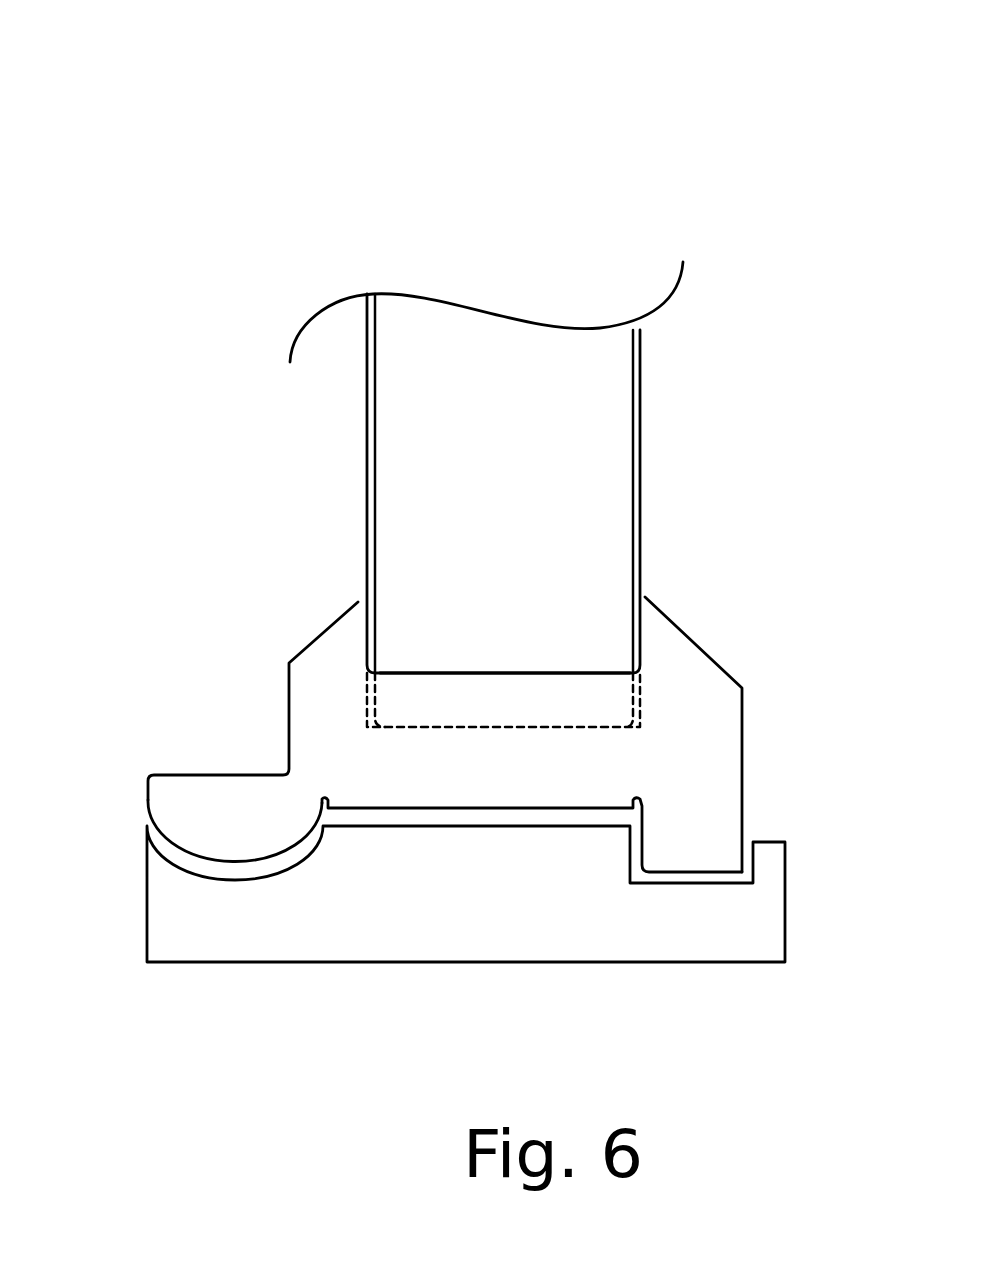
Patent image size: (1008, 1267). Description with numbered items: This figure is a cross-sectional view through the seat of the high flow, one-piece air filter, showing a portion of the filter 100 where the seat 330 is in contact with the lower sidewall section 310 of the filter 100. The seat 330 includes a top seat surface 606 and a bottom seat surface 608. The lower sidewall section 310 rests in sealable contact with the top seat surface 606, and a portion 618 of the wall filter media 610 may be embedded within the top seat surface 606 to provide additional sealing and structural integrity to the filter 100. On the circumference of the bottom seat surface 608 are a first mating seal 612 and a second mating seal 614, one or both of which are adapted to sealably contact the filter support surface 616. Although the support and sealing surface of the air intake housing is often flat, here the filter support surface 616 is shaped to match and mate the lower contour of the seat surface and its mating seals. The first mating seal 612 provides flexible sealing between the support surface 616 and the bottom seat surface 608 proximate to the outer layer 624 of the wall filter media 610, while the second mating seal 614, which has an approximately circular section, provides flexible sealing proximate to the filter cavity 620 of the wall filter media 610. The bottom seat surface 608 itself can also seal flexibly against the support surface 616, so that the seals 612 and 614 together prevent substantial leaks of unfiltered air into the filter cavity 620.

The filter 100 is at (580, 243).
The lower sidewall section 310 is at (482, 467).
The seat 330 is at (458, 734).
The top seat surface 606 is at (522, 670).
The bottom seat surface 608 is at (370, 807).
The wall filter media 610 is at (367, 418).
The first mating seal 612 is at (697, 840).
The second mating seal 614 is at (150, 803).
The filter support surface 616 is at (523, 905).
The portion of wall filter media 618 is at (565, 730).
The filter cavity 620 is at (153, 552).
The outer layer 624 is at (640, 352).